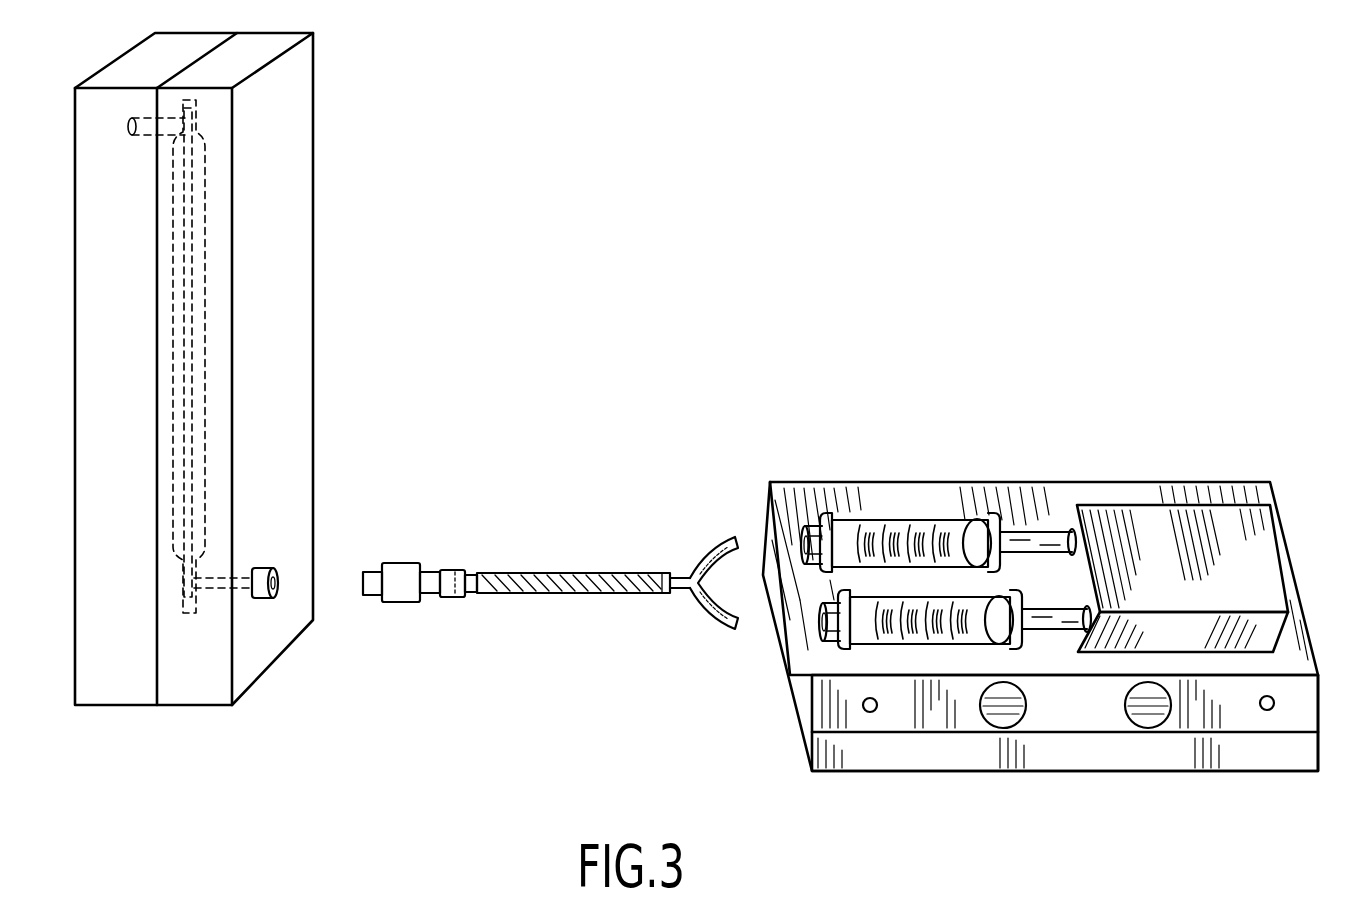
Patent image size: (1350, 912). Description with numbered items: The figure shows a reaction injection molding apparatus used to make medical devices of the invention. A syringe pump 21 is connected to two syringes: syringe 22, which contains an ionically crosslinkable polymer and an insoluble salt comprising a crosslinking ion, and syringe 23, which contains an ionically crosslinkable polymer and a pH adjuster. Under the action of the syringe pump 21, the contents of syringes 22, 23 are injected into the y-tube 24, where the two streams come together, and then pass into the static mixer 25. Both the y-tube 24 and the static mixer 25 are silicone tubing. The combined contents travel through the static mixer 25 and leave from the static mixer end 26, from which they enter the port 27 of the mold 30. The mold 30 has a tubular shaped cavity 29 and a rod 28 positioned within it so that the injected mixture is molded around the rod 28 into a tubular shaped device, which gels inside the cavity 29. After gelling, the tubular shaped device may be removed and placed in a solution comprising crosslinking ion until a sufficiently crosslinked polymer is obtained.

The syringe pump 21 is at (1240, 482).
The syringe 22 is at (893, 512).
The syringe 23 is at (883, 652).
The y-tube 24 is at (737, 630).
The static mixer 25 is at (578, 573).
The static mixer end 26 is at (400, 603).
The port 27 is at (264, 568).
The rod 28 is at (183, 488).
The tubular shaped cavity 29 is at (170, 226).
The mold 30 is at (280, 653).